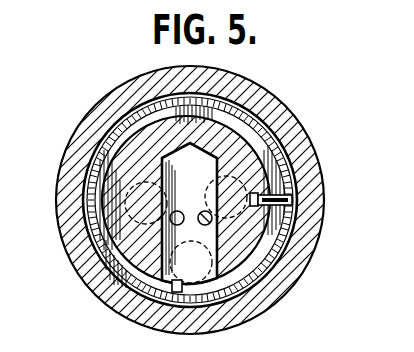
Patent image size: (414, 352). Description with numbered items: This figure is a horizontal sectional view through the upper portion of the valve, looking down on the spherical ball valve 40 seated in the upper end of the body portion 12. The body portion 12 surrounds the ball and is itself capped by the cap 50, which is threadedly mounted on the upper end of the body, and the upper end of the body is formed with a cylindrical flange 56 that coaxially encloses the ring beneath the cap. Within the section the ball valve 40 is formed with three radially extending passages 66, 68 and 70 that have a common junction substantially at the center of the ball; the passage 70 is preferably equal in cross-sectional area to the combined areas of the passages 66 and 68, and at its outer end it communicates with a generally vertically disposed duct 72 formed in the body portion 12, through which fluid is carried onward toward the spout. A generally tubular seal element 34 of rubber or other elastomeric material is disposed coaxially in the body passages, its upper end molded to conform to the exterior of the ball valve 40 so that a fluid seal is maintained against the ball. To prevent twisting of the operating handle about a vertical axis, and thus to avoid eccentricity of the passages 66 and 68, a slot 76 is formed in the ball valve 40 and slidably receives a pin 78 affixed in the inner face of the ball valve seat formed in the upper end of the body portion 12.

The body portion 12 is at (120, 254).
The seal element 34 is at (93, 180).
The ball valve 40 is at (138, 158).
The cap 50 is at (292, 266).
The cylindrical flange 56 is at (291, 214).
The passage 66 is at (170, 220).
The passage 68 is at (250, 262).
The passage 70 is at (240, 123).
The duct 72 is at (173, 290).
The slot 76 is at (277, 157).
The pin 78 is at (300, 168).